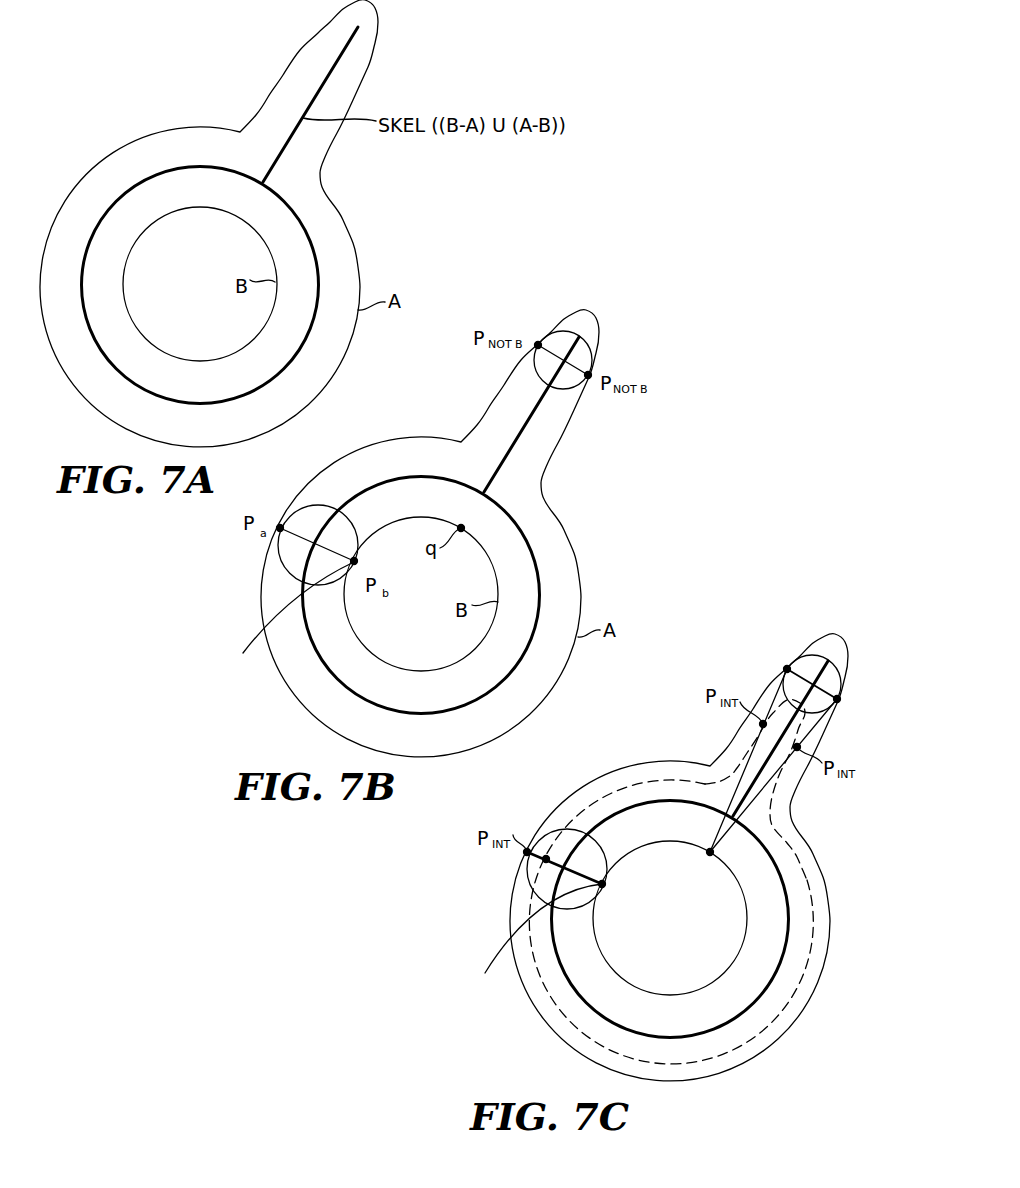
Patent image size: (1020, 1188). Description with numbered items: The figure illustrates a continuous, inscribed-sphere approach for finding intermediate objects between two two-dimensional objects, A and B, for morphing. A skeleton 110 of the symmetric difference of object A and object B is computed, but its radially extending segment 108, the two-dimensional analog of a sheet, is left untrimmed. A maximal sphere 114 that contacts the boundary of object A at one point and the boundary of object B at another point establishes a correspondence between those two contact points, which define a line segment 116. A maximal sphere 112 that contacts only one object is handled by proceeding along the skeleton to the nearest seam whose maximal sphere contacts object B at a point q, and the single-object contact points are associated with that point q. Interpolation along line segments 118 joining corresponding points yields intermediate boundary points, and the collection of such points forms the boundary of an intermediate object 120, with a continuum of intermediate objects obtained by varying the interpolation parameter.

In FIG. 7A, the radially extending segment 108 is at (345, 52).
In FIG. 7B, the radially extending segment 108 is at (554, 414).
In FIG. 7C, the radially extending segment 108 is at (811, 738).
In FIG. 7A, the skeleton 110 is at (315, 247).
In FIG. 7B, the skeleton 110 is at (467, 595).
In FIG. 7C, the skeleton 110 is at (720, 919).
In FIG. 7B, the maximal sphere 112 is at (597, 350).
In FIG. 7C, the maximal sphere 112 is at (840, 675).
In FIG. 7B, the maximal sphere 114 is at (285, 545).
In FIG. 7C, the maximal sphere 114 is at (533, 869).
In FIG. 7B, the line segment 116 is at (280, 611).
In FIG. 7C, the line segment 116 is at (524, 935).
In FIG. 7C, the line segment 118 is at (749, 789).
In FIG. 7C, the intermediate object 120 is at (703, 922).